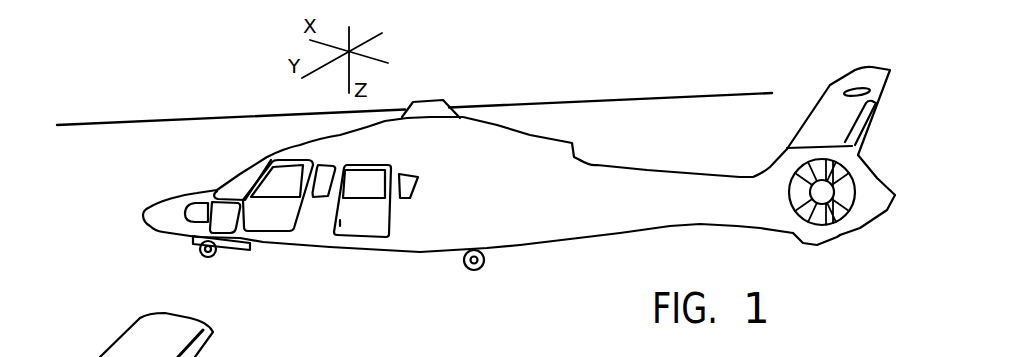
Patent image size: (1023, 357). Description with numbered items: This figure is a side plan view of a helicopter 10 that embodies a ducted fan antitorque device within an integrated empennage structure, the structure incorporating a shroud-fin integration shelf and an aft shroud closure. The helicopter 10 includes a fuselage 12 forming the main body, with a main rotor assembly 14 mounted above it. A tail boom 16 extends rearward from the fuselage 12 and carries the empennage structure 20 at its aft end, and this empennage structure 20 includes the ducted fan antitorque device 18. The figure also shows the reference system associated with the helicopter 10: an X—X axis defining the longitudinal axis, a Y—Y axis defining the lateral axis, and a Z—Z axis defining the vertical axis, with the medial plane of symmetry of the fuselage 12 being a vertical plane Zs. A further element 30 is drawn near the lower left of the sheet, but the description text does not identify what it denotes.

The helicopter 10 is at (162, 191).
The fuselage 12 is at (412, 253).
The main rotor assembly 14 is at (458, 97).
The tail boom 16 is at (673, 227).
The ducted fan antitorque device 18 is at (845, 222).
The empennage structure 20 is at (877, 148).
The display device 30 is at (123, 356).